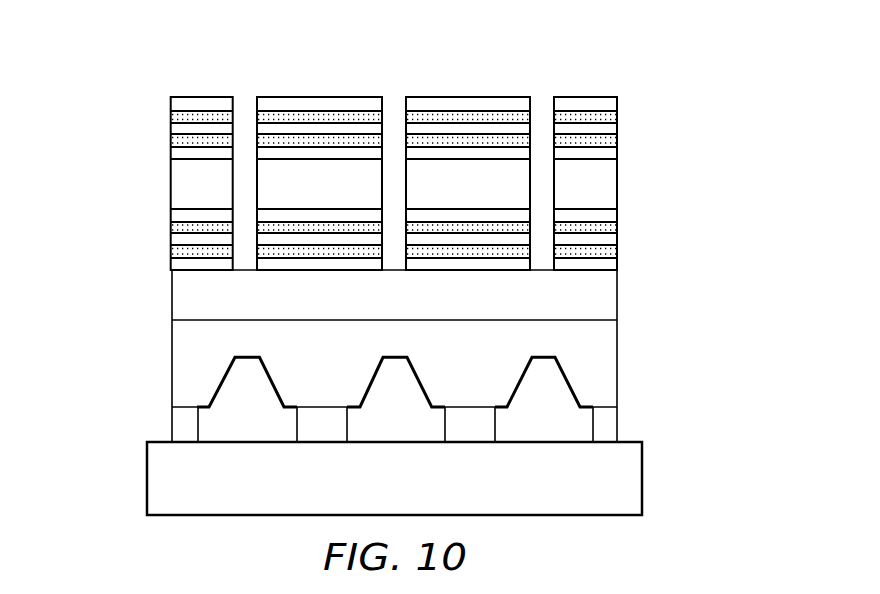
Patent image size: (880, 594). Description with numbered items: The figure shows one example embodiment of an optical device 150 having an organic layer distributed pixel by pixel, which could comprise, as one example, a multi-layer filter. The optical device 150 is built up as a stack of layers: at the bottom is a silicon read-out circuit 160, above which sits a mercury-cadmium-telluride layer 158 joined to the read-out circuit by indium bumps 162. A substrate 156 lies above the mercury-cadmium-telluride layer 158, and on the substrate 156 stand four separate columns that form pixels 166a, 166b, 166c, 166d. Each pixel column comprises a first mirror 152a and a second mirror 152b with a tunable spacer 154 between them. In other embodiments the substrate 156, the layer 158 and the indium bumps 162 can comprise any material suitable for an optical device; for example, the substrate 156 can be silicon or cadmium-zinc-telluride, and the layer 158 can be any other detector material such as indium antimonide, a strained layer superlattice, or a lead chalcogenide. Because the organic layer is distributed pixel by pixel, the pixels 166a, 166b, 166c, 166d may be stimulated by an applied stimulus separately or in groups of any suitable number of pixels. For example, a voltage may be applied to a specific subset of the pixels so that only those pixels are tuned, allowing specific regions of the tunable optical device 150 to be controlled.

The optical device 150 is at (666, 132).
The mirror 152a is at (157, 100).
The mirror 152b is at (157, 210).
The tunable spacer 154 is at (180, 185).
The substrate 156 is at (605, 293).
The mercury-cadmium-telluride layer 158 is at (182, 363).
The silicon read-out circuit 160 is at (418, 492).
The indium bumps 162 is at (182, 428).
The pixel 166a is at (202, 85).
The pixel 166b is at (318, 85).
The pixel 166c is at (467, 82).
The pixel 166d is at (584, 82).